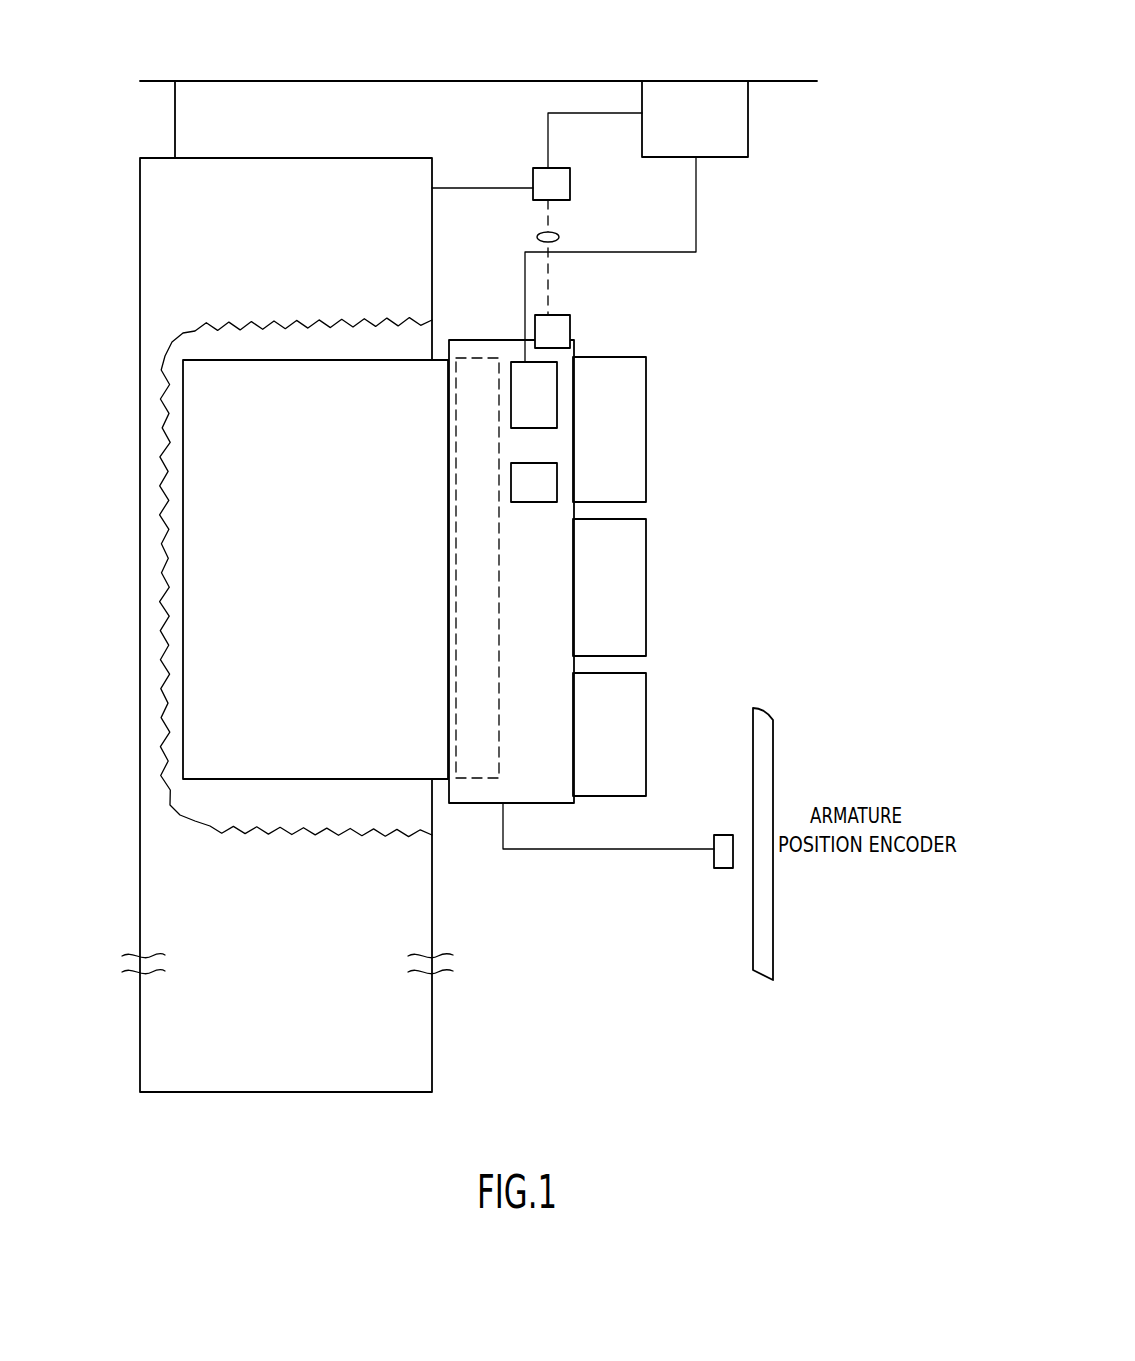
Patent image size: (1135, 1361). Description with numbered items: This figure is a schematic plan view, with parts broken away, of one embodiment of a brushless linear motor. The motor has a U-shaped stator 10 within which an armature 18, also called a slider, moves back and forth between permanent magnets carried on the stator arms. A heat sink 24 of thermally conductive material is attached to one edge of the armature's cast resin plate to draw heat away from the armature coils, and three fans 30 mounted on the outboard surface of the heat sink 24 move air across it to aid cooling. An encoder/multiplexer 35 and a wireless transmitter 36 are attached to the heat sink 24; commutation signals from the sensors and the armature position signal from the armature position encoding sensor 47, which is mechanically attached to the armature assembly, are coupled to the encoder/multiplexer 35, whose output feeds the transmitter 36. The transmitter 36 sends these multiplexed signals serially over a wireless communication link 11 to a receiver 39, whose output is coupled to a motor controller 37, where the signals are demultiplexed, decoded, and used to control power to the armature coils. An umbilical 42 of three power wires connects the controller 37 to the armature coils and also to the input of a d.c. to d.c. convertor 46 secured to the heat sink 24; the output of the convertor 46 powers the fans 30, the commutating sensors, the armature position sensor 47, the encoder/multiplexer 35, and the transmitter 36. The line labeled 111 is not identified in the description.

The stator 10 is at (158, 241).
The power supply line 111 is at (597, 81).
The wireless serial communication link 11 is at (560, 237).
The armature 18 is at (318, 548).
The heat sink 24 is at (481, 790).
The fans 30 is at (627, 447).
The encoder/multiplexer 35 is at (537, 504).
The wireless transmitter 36 is at (562, 325).
The motor controller 37 is at (749, 133).
The receiver 39 is at (571, 183).
The umbilical 42 is at (696, 240).
The d.c. to d.c. convertor 46 is at (534, 395).
The armature position encoding sensor 47 is at (726, 870).